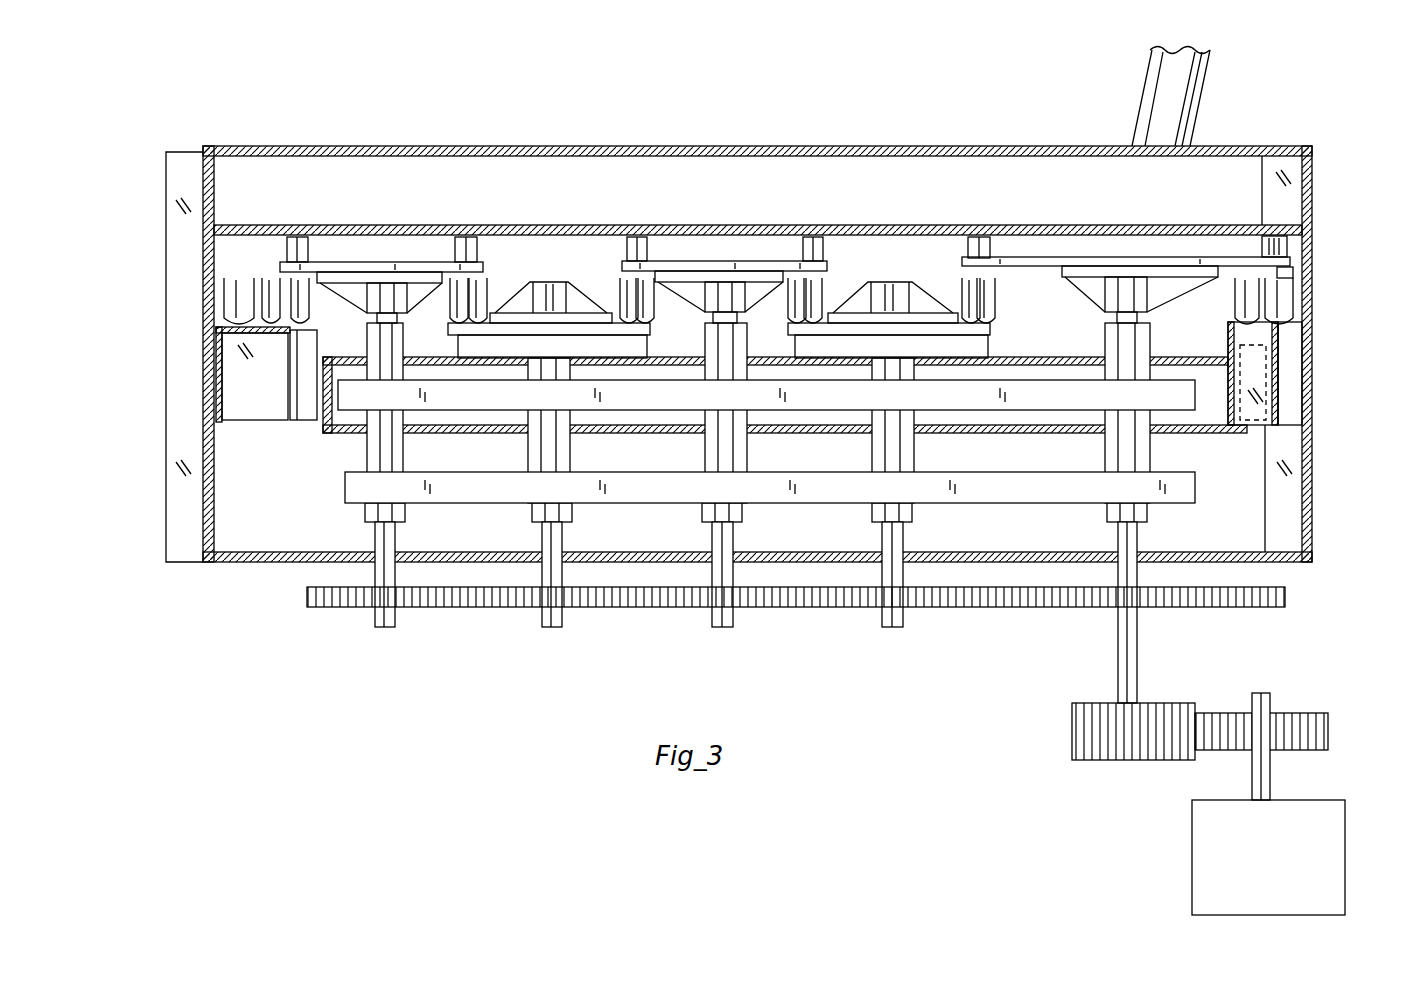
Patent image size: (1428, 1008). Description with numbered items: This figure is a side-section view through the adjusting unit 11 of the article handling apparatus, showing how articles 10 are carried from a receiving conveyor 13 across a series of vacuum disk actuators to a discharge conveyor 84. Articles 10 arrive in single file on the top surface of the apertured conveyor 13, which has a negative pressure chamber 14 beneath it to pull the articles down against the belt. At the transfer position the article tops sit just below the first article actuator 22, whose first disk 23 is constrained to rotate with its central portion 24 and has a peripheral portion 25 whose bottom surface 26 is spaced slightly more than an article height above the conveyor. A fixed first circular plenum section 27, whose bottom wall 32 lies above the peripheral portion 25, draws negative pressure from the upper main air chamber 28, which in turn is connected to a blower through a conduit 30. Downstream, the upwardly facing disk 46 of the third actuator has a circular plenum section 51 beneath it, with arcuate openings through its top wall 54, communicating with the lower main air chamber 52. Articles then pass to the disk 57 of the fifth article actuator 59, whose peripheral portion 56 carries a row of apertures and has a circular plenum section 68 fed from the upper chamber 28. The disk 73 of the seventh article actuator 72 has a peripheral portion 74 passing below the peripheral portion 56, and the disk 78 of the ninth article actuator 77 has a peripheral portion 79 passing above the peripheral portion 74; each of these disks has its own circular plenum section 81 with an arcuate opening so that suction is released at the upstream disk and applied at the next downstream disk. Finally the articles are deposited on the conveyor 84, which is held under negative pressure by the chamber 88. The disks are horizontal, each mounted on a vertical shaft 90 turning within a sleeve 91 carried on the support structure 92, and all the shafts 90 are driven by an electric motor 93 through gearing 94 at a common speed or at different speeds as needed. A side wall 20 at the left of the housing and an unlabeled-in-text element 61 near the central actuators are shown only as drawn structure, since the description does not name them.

The articles 10 is at (238, 298).
The adjusting unit 11 is at (345, 148).
The conveyor 13 is at (1285, 325).
The negative pressure chamber 14 is at (1292, 396).
The side wall 20 is at (228, 243).
The first article actuator 22 is at (1068, 265).
The first disk 23 is at (1003, 262).
The central portion 24 is at (1140, 265).
The peripheral portion 25 is at (1285, 262).
The bottom surface 26 is at (1285, 277).
The first circular plenum section 27 is at (1268, 243).
The upper main air chamber 28 is at (848, 160).
The conduit 30 is at (1185, 97).
The bottom wall 32 is at (1215, 265).
The rotatable disk 46 is at (862, 352).
The circular plenum sections 51 is at (930, 345).
The lower main air chamber 52 is at (1215, 412).
The top wall 54 is at (990, 342).
The peripheral portion 56 is at (828, 245).
The disk 57 is at (780, 268).
The fifth article actuator 59 is at (672, 268).
The cam block 61 is at (828, 310).
The circular plenum section 68 is at (742, 250).
The seventh article actuator 72 is at (528, 365).
The disk 73 is at (612, 355).
The peripheral portion 74 is at (630, 355).
The ninth article actuator 77 is at (322, 262).
The disk 78 is at (478, 262).
The peripheral portion 79 is at (487, 272).
The circular plenum section 81 is at (382, 255).
The conveyor 84 is at (238, 328).
The chamber 88 is at (238, 398).
The shafts 90 is at (382, 535).
The sleeves 91 is at (380, 440).
The support structure 92 is at (1052, 390).
The electric motor 93 is at (1348, 812).
The gearing 94 is at (1046, 755).